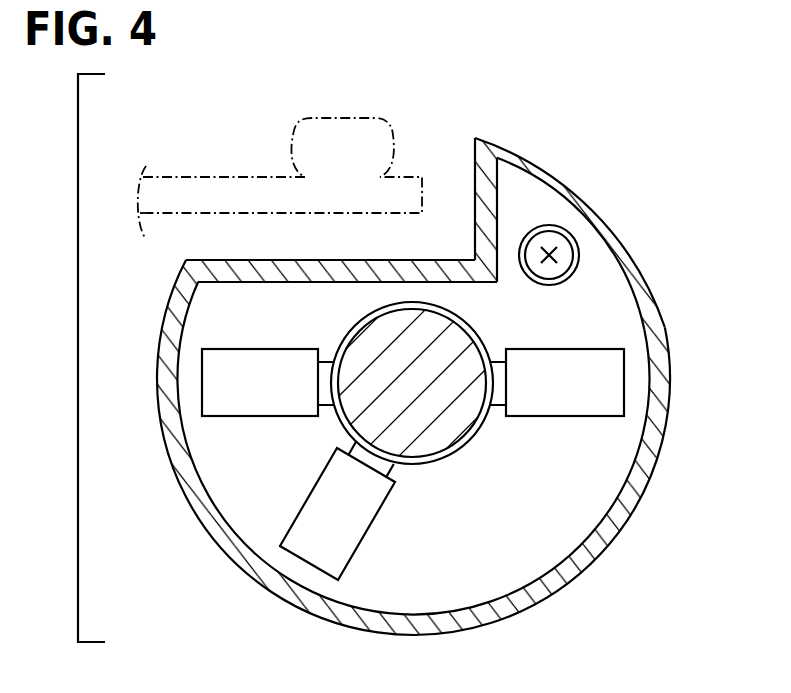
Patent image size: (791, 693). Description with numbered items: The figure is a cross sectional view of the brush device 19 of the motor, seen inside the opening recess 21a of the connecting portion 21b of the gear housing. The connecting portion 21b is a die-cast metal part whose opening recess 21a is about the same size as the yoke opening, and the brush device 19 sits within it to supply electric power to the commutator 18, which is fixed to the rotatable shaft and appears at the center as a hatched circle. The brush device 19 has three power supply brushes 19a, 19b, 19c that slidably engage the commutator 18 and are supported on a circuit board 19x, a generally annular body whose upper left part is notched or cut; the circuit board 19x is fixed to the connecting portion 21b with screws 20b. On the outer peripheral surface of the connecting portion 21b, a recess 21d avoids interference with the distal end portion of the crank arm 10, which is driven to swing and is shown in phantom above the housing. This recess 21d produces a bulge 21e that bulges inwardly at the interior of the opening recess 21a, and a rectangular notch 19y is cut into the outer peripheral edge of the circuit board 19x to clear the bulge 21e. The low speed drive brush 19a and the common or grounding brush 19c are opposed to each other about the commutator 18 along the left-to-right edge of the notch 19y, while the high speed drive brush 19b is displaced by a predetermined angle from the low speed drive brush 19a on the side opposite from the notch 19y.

The crank arm 10 is at (228, 177).
The commutator 18 is at (474, 320).
The brush device 19 is at (608, 277).
The power supply brush (low speed drive brush) 19a is at (330, 357).
The power supply brush (high speed drive brush) 19b is at (351, 452).
The power supply brush (common brush or grounding brush) 19c is at (500, 403).
The circuit board 19x is at (636, 318).
The notch 19y is at (245, 276).
The screws 20b is at (551, 266).
The opening recess 21a is at (566, 212).
The connecting portion 21b is at (532, 165).
The recess 21d is at (475, 177).
The bulge 21e is at (400, 268).